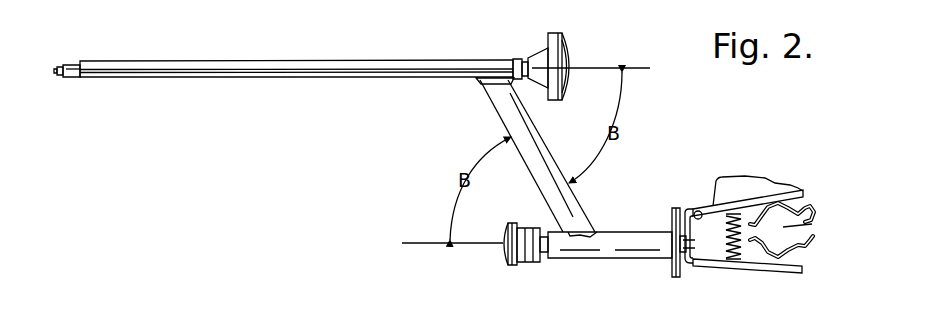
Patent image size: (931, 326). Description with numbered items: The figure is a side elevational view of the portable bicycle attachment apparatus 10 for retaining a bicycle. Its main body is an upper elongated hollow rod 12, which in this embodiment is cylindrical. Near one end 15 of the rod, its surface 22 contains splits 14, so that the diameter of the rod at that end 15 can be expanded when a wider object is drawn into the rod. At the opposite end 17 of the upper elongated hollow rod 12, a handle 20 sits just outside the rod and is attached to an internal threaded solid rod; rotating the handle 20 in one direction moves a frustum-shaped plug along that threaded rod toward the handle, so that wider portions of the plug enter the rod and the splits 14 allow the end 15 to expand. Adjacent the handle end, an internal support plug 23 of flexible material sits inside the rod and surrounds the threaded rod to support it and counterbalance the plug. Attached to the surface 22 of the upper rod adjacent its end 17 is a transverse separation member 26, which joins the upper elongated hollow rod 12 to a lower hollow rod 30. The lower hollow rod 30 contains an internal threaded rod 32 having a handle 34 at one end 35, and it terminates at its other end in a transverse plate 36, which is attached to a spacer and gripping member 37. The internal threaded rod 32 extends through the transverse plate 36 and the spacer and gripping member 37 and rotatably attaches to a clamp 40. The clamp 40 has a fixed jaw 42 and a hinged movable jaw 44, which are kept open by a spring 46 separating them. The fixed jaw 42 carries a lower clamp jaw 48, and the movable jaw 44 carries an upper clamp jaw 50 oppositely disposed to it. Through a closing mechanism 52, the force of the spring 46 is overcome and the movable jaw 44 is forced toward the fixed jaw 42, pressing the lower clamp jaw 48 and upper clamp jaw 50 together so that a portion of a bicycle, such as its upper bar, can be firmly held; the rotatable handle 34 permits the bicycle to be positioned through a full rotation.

The portable bicycle attachment apparatus 10 is at (363, 55).
The upper elongated hollow rod 12 is at (270, 80).
The splits 14 is at (95, 67).
The end 15 is at (78, 77).
The end 17 is at (537, 55).
The handle 20 is at (553, 42).
The surface 22 is at (218, 60).
The internal support plug 23 is at (520, 60).
The transverse separation member 26 is at (543, 152).
The lower hollow rod 30 is at (608, 233).
The internal threaded rod 32 is at (686, 268).
The handle 34 is at (511, 265).
The end 35 is at (545, 261).
The transverse plate 36 is at (675, 207).
The spacer and gripping member 37 is at (692, 209).
The clamp 40 is at (763, 274).
The fixed jaw 42 is at (800, 273).
The hinged movable jaw 44 is at (803, 190).
The spring 46 is at (723, 238).
The lower clamp jaw 48 is at (808, 246).
The upper clamp jaw 50 is at (783, 227).
The closing mechanism 52 is at (740, 183).